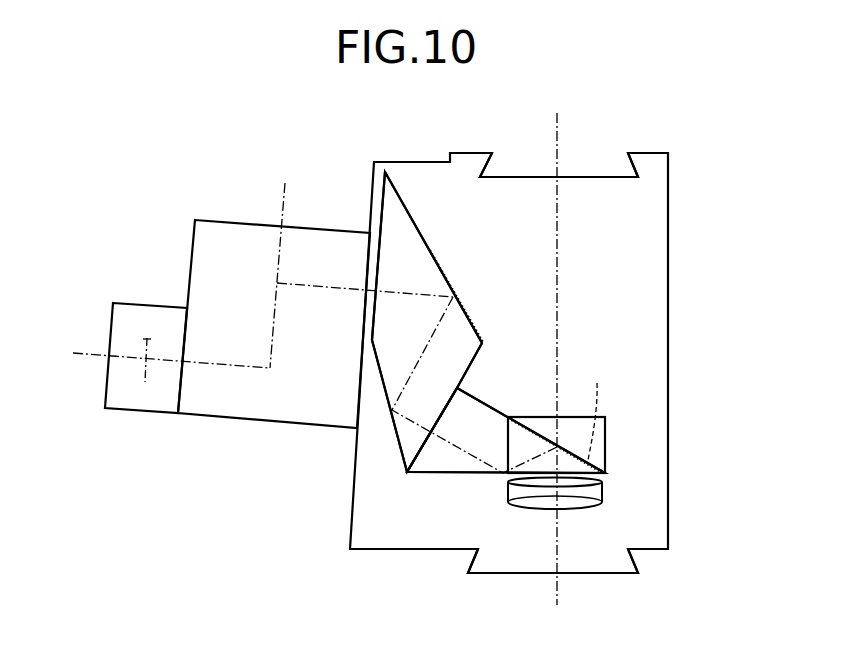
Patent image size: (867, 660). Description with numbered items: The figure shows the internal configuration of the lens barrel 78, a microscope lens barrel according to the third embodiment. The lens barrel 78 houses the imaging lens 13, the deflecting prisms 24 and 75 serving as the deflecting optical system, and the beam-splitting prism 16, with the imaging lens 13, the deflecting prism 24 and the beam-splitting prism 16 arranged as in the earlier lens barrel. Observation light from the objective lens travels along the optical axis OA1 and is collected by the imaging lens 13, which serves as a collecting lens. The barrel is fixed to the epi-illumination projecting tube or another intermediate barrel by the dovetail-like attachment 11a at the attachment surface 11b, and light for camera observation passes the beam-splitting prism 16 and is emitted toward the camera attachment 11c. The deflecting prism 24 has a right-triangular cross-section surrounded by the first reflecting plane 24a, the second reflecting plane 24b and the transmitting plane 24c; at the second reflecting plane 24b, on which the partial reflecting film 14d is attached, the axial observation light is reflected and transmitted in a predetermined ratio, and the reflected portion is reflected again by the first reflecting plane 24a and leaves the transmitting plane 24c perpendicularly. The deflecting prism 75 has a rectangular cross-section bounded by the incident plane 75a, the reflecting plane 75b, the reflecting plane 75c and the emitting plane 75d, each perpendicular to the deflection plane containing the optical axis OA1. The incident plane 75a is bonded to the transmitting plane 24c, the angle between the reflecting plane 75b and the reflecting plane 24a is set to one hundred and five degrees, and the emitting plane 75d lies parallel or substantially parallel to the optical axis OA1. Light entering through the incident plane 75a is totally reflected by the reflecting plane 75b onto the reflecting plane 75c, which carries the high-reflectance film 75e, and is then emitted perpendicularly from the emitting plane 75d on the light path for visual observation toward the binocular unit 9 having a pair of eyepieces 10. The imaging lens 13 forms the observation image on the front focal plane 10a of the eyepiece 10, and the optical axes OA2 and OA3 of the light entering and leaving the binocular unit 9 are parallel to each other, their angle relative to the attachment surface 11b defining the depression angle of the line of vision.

The lens barrel 78 is at (668, 330).
The attachment 11a is at (608, 574).
The attachment surface 11b is at (402, 550).
The camera attachment 11c is at (597, 177).
The optical axis OA1 is at (553, 582).
The optical axis OA2 is at (408, 318).
The optical axis OA3 is at (83, 355).
The binocular unit 9 is at (240, 422).
The eyepiece 10 is at (140, 413).
The front focal plane 10a is at (140, 347).
The deflecting prism 75 is at (389, 200).
The incident plane 75a is at (420, 448).
The reflecting plane 75b is at (384, 386).
The reflecting plane 75c is at (417, 227).
The emitting plane 75d is at (380, 218).
The high-reflectance film 75e is at (453, 298).
The deflecting prism 24 is at (447, 462).
The first reflecting plane 24a is at (477, 474).
The second reflecting plane 24b is at (493, 408).
The transmitting plane 24c is at (420, 462).
The beam-splitting prism 16 is at (607, 424).
The partial reflecting film 14d is at (597, 409).
The imaging lens 13 is at (603, 493).